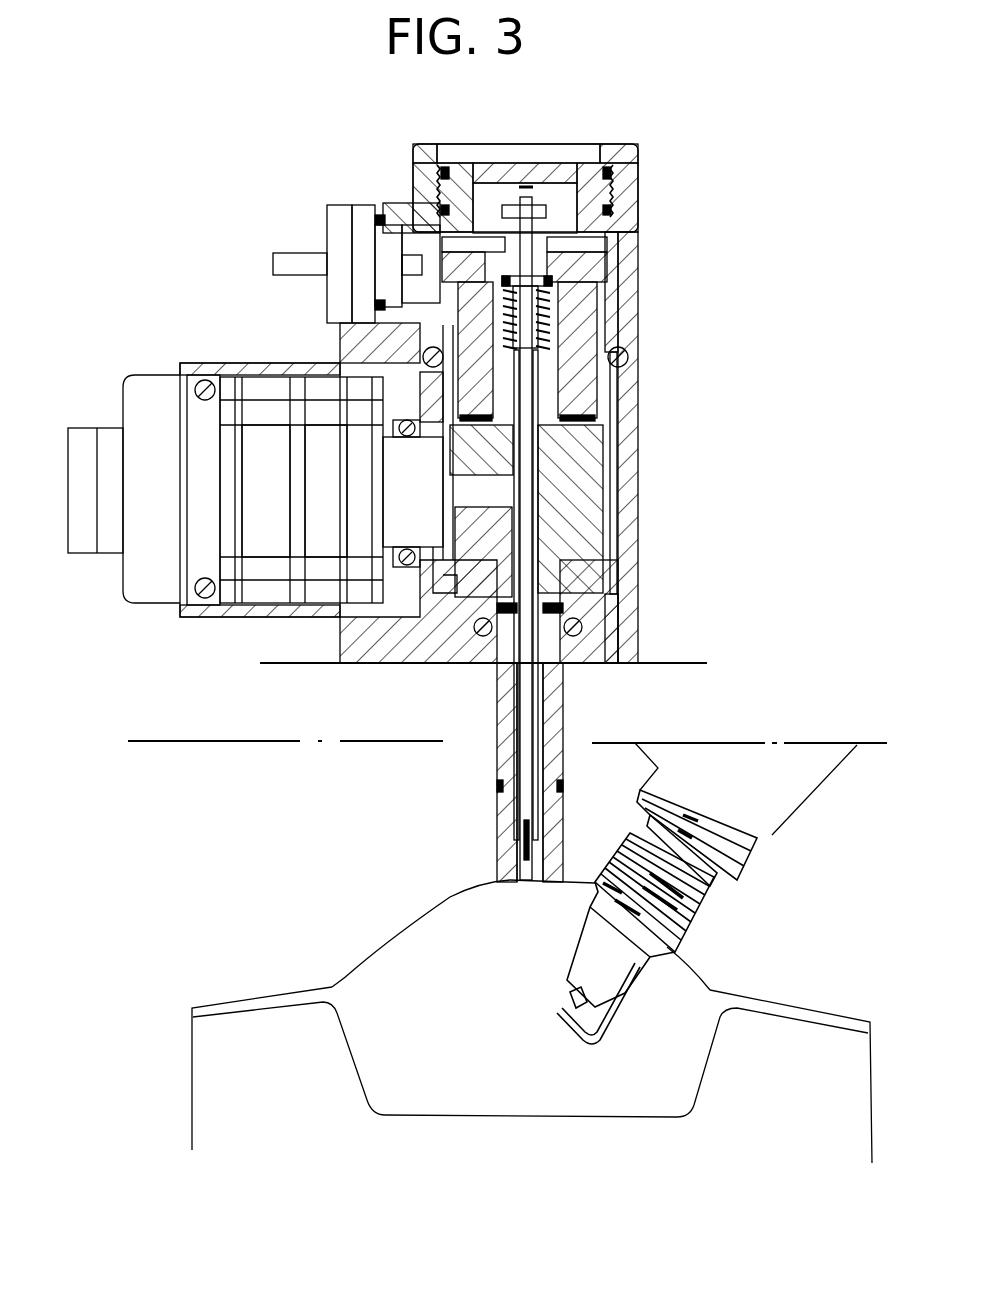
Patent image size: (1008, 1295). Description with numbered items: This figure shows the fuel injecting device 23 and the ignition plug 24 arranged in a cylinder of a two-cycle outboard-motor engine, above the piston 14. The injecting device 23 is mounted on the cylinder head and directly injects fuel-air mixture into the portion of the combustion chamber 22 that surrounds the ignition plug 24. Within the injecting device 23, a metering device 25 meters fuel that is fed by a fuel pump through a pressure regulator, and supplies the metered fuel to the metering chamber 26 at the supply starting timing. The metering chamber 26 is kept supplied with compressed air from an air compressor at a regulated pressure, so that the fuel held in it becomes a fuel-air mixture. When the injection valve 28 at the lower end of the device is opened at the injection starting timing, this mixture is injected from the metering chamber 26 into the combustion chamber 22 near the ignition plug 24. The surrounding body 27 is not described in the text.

The piston 14 is at (203, 1060).
The combustion chamber 22 is at (394, 960).
The injecting device 23 is at (355, 190).
The ignition plug 24 is at (757, 840).
The metering device 25 is at (148, 583).
The metering chamber 26 is at (540, 533).
The housing 27 is at (638, 200).
The injection valve 28 is at (498, 845).